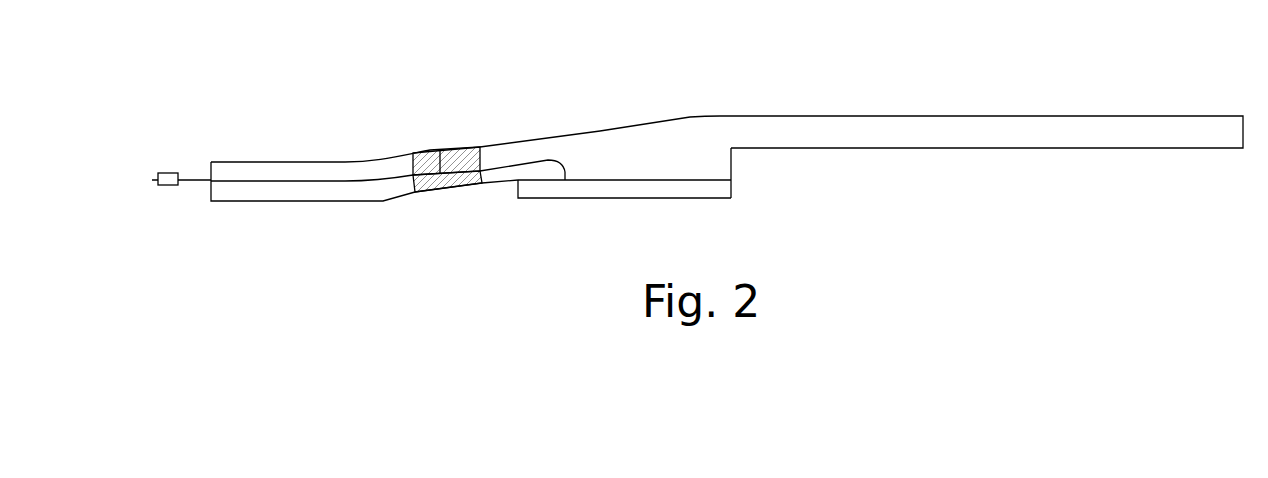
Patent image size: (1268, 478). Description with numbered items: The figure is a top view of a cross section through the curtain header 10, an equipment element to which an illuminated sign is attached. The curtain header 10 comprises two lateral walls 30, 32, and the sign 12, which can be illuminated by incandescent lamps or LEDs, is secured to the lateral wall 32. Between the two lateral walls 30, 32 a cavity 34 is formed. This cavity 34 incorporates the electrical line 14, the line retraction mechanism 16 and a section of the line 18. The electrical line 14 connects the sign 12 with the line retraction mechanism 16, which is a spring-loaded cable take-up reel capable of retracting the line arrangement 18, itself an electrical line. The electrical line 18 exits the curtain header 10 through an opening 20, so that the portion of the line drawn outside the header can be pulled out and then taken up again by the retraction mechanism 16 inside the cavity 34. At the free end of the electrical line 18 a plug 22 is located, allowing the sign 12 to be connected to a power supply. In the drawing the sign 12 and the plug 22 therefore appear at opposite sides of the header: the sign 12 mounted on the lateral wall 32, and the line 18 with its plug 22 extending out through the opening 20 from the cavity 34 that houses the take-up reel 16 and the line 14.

The equipment element 10 is at (980, 137).
The illuminated sign 12 is at (700, 188).
The electrical line 14 is at (518, 156).
The line retraction mechanism 16 is at (440, 152).
The line arrangement 18 is at (312, 178).
The opening 20 is at (236, 182).
The plug 22 is at (168, 173).
The lateral wall 30 is at (743, 113).
The lateral wall 32 is at (503, 183).
The cavity 34 is at (713, 157).